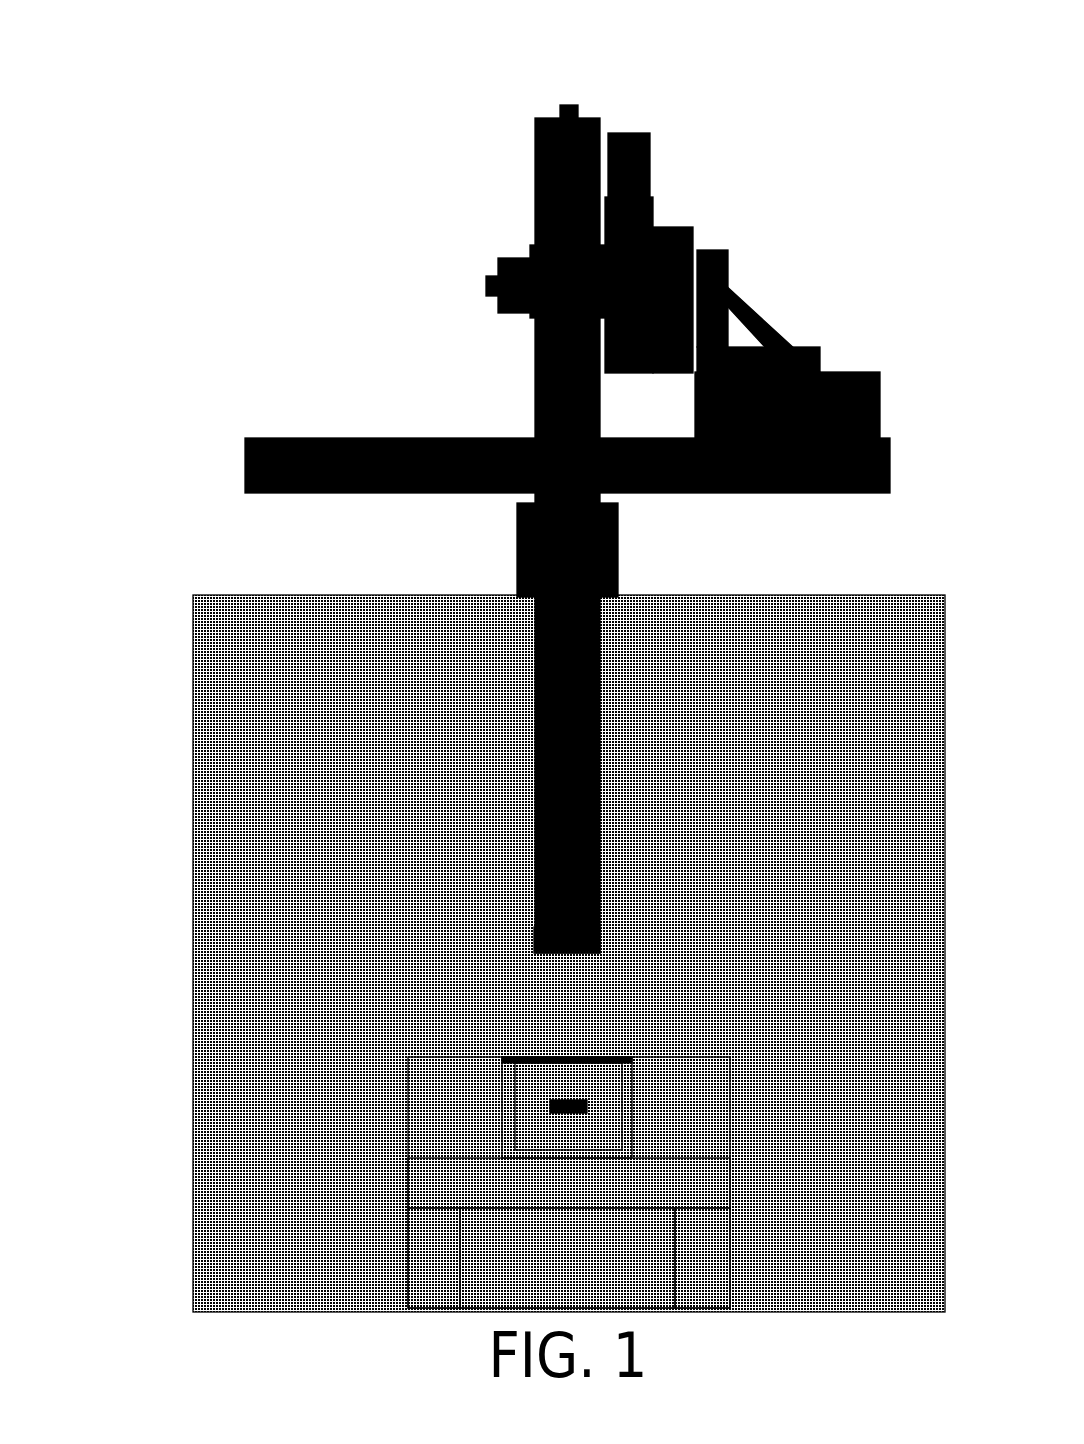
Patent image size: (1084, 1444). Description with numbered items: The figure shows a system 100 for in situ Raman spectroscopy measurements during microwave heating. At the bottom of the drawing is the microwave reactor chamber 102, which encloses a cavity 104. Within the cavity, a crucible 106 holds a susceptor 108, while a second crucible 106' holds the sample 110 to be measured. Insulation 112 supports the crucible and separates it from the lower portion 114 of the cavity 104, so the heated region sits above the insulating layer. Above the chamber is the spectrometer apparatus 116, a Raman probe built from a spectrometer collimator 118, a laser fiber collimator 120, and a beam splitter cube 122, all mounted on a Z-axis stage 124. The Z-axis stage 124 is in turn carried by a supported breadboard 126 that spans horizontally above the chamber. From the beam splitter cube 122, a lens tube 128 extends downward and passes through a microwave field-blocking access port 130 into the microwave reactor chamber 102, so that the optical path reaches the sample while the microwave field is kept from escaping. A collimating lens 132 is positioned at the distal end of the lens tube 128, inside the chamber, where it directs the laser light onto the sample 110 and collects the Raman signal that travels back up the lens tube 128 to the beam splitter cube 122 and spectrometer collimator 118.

The system 100 is at (518, 62).
The microwave reactor chamber 102 is at (832, 750).
The cavity 104 is at (666, 1143).
The crucible 106 is at (442, 1112).
The crucible 106' is at (544, 1030).
The susceptor 108 is at (603, 1128).
The sample 110 is at (557, 1100).
The insulation 112 is at (663, 1178).
The lower portion 114 is at (592, 1267).
The spectrometer apparatus 116 is at (150, 236).
The spectrometer collimator 118 is at (533, 177).
The laser fiber collimator 120 is at (488, 287).
The beam splitter cube 122 is at (553, 300).
The Z-axis stage 124 is at (727, 237).
The breadboard 126 is at (705, 470).
The lens tube 128 is at (532, 718).
The microwave field-blocking access port 130 is at (517, 578).
The collimating lens 132 is at (527, 938).